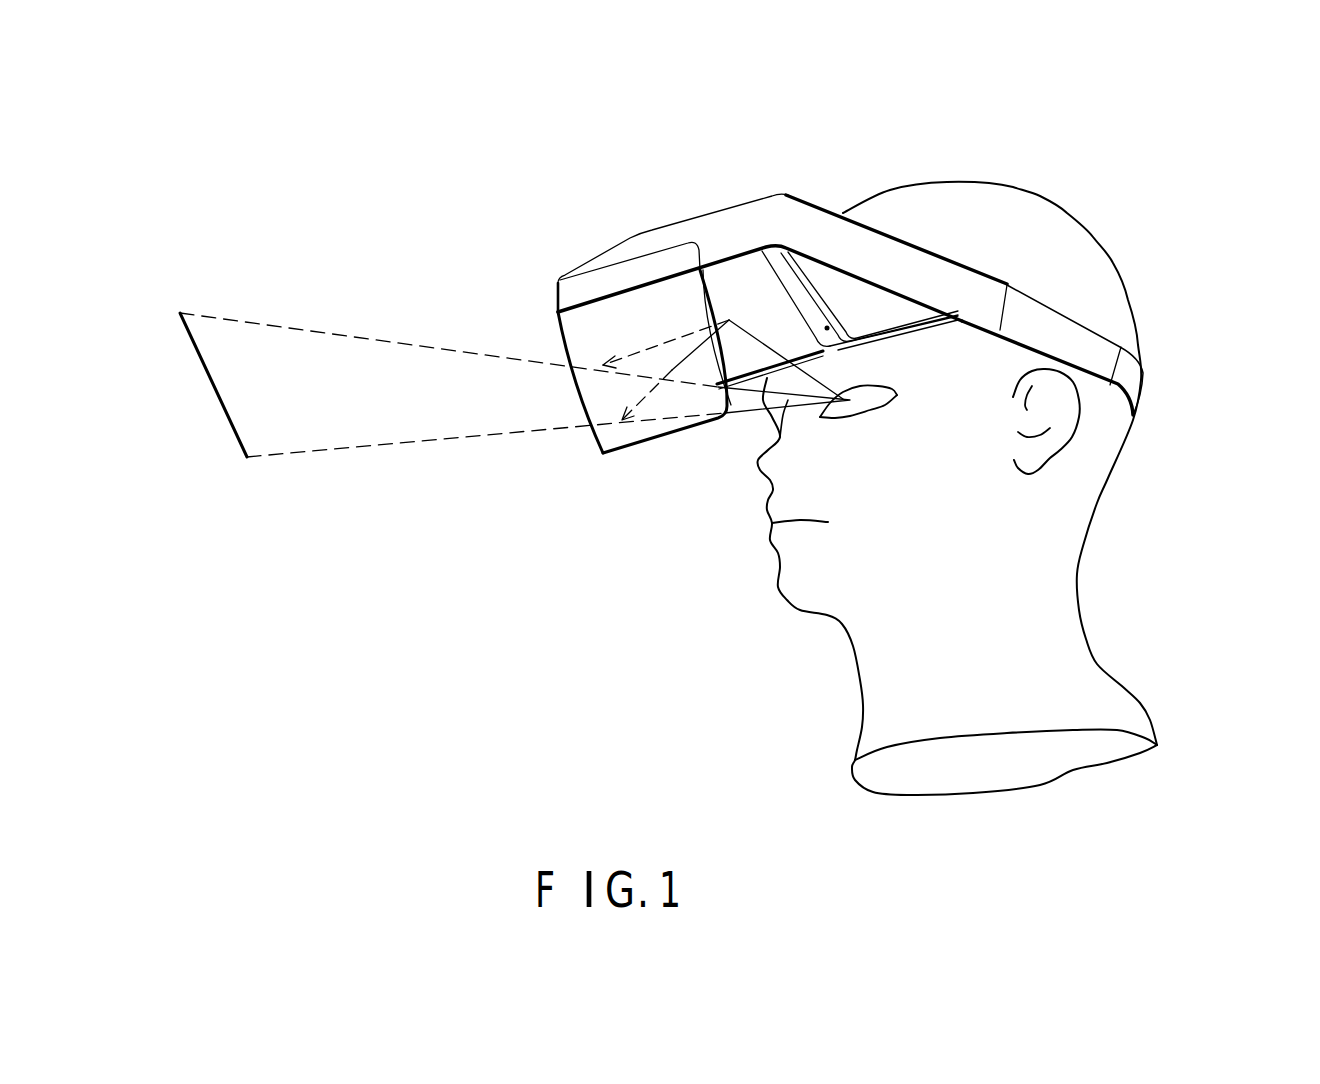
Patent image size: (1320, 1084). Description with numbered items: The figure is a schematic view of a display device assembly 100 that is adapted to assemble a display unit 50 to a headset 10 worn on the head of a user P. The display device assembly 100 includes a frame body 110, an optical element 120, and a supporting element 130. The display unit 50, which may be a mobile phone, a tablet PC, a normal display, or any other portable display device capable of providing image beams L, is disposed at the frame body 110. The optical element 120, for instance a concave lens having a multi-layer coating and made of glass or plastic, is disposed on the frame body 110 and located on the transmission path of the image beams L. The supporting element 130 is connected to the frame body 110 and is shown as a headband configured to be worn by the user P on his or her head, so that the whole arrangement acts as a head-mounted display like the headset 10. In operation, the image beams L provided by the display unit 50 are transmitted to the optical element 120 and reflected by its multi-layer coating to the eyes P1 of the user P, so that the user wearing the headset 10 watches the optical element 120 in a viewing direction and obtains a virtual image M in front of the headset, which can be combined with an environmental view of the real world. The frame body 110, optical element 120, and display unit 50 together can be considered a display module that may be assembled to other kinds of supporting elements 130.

The headset 10 is at (840, 271).
The display device assembly 100 is at (692, 291).
The frame body 110 is at (567, 297).
The optical element 120 is at (597, 322).
The supporting element 130 is at (1100, 360).
The display unit 50 is at (790, 250).
The user P is at (1073, 233).
The eyes P1 is at (869, 410).
The virtual image M is at (223, 415).
The image beams L is at (662, 390).